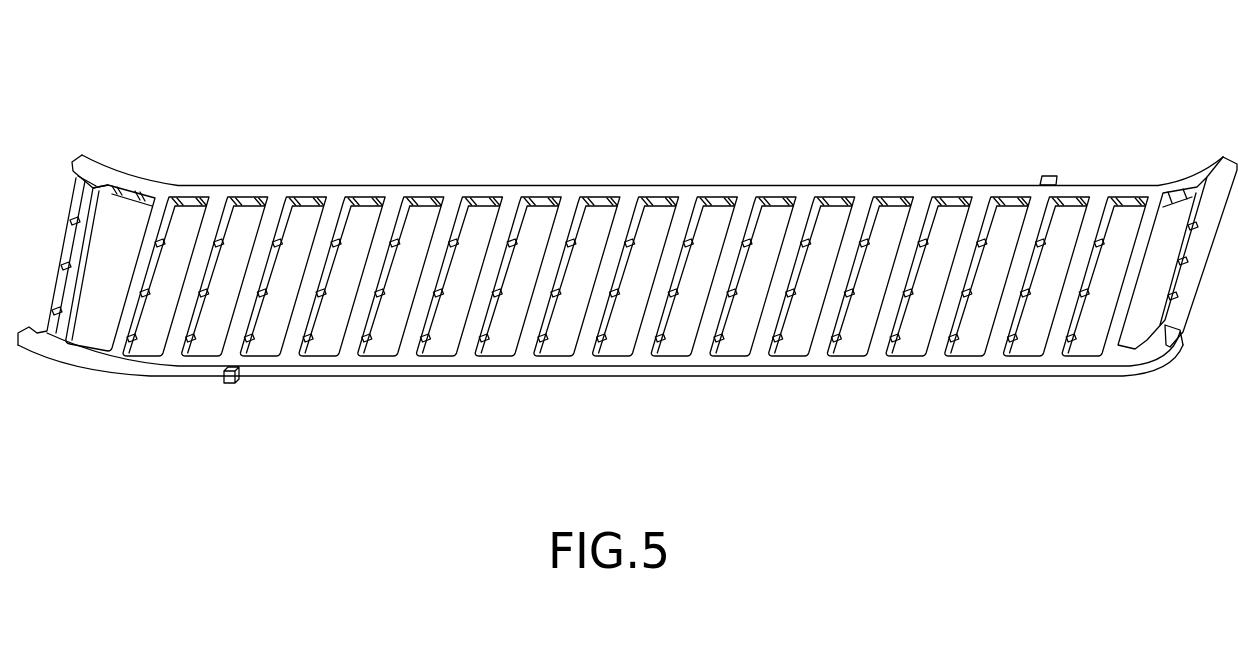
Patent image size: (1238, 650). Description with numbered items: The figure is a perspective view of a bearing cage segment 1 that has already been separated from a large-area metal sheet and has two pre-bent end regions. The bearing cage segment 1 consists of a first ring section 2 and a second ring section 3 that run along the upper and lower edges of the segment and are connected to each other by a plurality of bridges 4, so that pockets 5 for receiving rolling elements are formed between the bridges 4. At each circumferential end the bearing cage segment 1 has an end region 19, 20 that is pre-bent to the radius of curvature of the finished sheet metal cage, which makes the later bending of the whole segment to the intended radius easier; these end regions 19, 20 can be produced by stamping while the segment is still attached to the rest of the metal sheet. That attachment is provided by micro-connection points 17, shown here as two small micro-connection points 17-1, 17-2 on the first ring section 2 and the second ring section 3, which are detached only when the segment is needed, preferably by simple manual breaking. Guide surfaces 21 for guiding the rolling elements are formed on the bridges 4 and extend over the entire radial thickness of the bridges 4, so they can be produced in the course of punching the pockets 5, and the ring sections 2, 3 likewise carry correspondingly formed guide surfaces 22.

The bearing cage segment 1 is at (485, 65).
The first ring section 2 is at (660, 192).
The second ring section 3 is at (683, 362).
The bridges 4 is at (373, 283).
The pockets 5 is at (770, 258).
The micro-connection points 17 is at (640, 267).
The micro-connection point 17-1 is at (1047, 166).
The micro-connection point 17-2 is at (232, 392).
The end region 19 is at (110, 140).
The end region 20 is at (1167, 130).
The guide surfaces 21 is at (406, 242).
The guide surfaces 22 is at (604, 215).